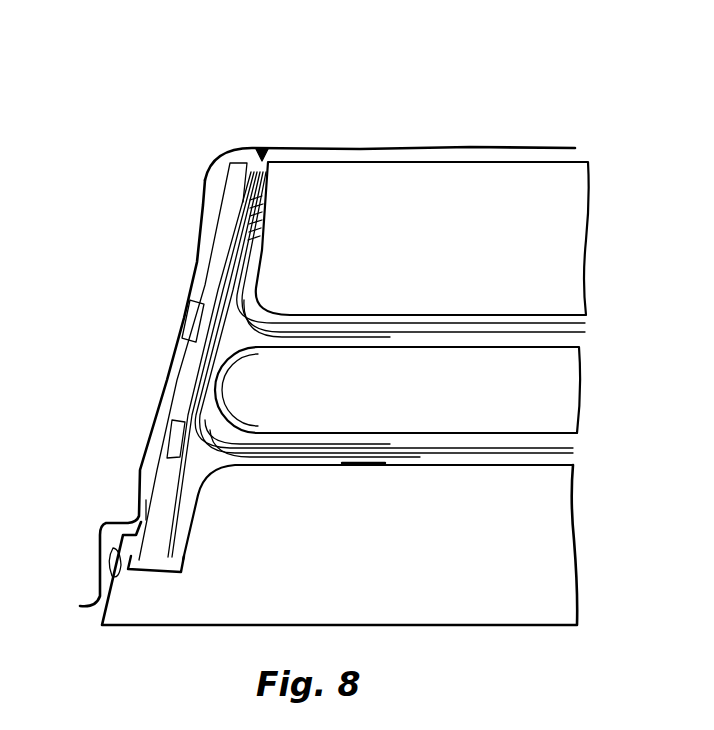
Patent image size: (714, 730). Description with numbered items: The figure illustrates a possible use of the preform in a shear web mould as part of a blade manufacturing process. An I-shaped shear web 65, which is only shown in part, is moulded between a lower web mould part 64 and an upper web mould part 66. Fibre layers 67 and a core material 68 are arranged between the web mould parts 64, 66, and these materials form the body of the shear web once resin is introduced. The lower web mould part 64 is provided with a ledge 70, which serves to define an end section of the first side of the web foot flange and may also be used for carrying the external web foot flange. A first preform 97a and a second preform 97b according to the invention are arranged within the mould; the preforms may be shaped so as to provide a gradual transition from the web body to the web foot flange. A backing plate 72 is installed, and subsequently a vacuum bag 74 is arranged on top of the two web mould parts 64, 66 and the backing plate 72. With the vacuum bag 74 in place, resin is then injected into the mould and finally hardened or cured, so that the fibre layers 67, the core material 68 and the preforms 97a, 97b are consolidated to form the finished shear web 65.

The lower web mould part 64 is at (540, 572).
The I-shaped shear web 65 is at (263, 147).
The upper web mould part 66 is at (557, 253).
The fibre layers 67 is at (253, 178).
The core material 68 is at (545, 392).
The ledge 70 is at (143, 522).
The backing plate 72 is at (180, 380).
The vacuum bag 74 is at (365, 146).
The first preform 97a is at (192, 302).
The second preform 97b is at (185, 398).